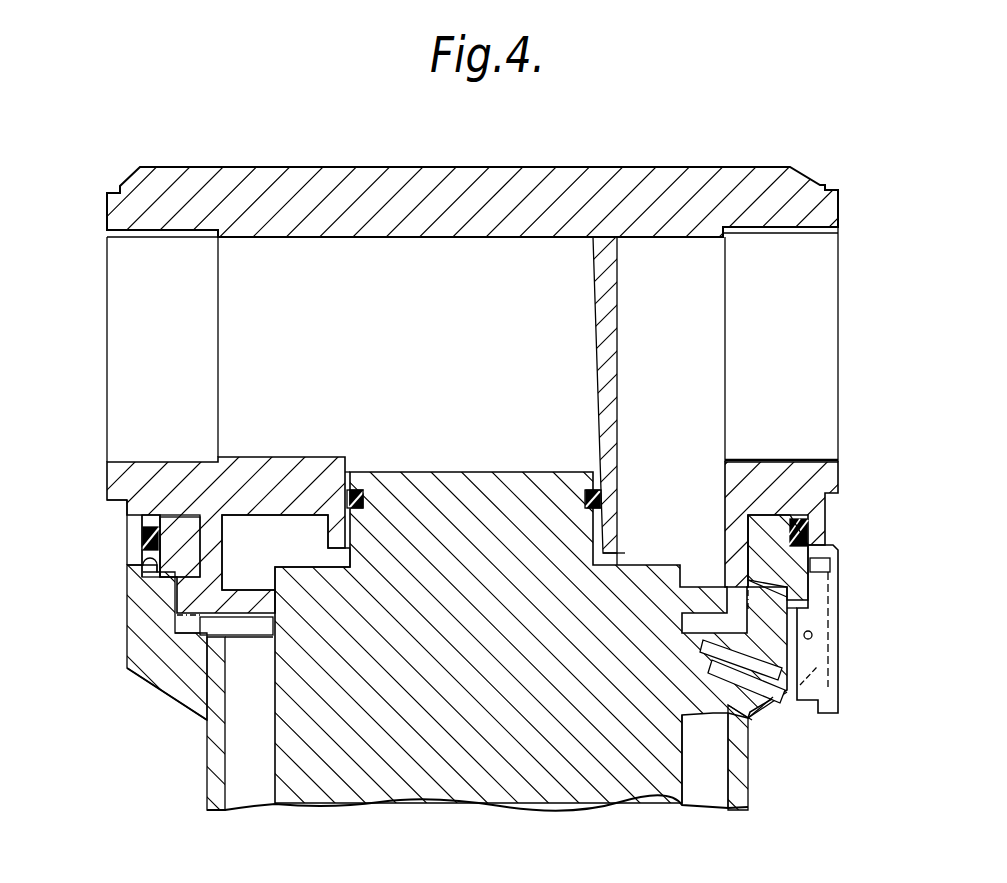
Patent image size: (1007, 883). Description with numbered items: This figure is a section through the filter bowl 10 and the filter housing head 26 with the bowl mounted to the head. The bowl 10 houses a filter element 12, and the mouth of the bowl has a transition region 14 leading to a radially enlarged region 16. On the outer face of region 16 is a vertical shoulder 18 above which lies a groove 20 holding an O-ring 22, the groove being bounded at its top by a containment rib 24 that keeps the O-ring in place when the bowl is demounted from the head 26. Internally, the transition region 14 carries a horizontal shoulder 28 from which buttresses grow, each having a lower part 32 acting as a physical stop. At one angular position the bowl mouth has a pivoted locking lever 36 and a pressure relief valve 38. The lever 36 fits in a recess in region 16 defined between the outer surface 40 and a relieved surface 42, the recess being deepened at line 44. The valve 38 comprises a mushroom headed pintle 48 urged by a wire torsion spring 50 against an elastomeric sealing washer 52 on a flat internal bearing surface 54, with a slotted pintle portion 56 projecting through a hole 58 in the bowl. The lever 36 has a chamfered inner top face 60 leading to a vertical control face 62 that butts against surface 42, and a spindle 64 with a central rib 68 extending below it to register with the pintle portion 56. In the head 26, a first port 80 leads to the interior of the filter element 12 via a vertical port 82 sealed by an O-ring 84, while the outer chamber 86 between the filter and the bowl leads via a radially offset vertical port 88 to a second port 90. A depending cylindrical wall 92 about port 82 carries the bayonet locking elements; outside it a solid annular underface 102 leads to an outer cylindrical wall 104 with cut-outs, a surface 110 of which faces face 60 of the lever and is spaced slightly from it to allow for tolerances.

The filter bowl 10 is at (748, 807).
The filter element 12 is at (273, 753).
The transition region 14 is at (172, 698).
The radially enlarged region 16 is at (140, 612).
The vertical shoulder 18 is at (150, 578).
The groove 20 is at (150, 540).
The O-ring 22 is at (150, 540).
The containment rib 24 is at (157, 520).
The filter housing head 26 is at (438, 164).
The horizontal shoulder 28 is at (203, 637).
The lower part of buttress 32 is at (243, 625).
The locking lever 36 is at (839, 670).
The pressure relief valve 38 is at (792, 713).
The outer surface 40 is at (832, 605).
The relieved surface 42 is at (827, 587).
The line 44 is at (808, 592).
The mushroom headed pintle 48 is at (723, 667).
The wire torsion spring 50 is at (707, 640).
The elastomeric sealing washer 52 is at (720, 713).
The internal bearing surface 54 is at (752, 720).
The pintle portion 56 is at (782, 708).
The hole 58 is at (763, 630).
The chamfered inner top face 60 is at (813, 557).
The vertical control face 62 is at (830, 565).
The spindle 64 is at (812, 635).
The central rib 68 is at (810, 690).
The first port 80 is at (173, 334).
The vertical port 82 is at (352, 488).
The O-ring 84 is at (366, 496).
The outer chamber 86 is at (723, 774).
The radially offset vertical port 88 is at (688, 438).
The second port 90 is at (798, 334).
The depending cylindrical wall 92 is at (224, 540).
The solid annular underface 102 is at (178, 518).
The outer cylindrical wall 104 is at (125, 520).
The surface of cut-out 110 is at (820, 540).